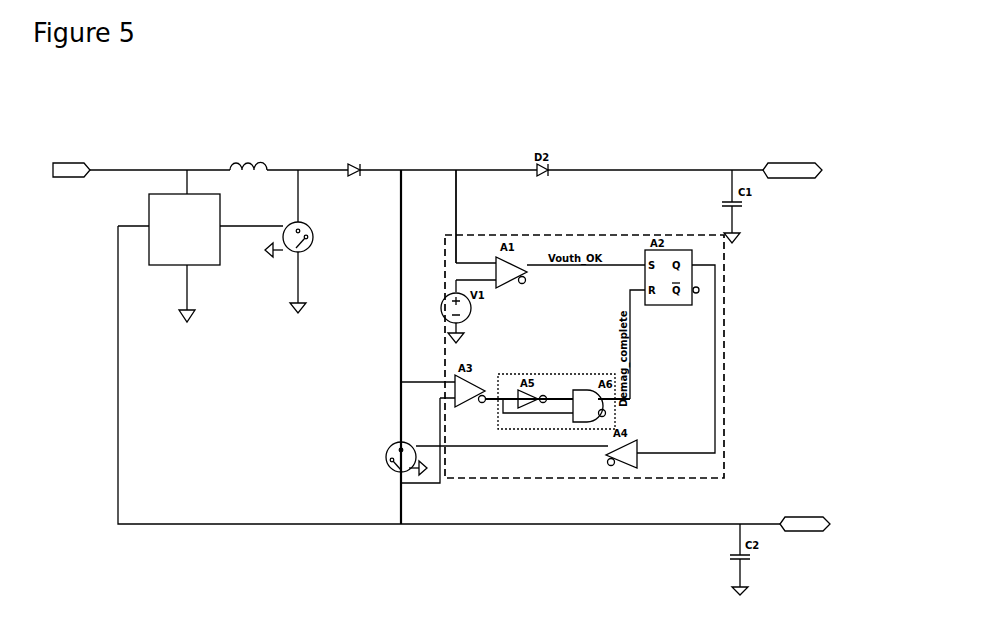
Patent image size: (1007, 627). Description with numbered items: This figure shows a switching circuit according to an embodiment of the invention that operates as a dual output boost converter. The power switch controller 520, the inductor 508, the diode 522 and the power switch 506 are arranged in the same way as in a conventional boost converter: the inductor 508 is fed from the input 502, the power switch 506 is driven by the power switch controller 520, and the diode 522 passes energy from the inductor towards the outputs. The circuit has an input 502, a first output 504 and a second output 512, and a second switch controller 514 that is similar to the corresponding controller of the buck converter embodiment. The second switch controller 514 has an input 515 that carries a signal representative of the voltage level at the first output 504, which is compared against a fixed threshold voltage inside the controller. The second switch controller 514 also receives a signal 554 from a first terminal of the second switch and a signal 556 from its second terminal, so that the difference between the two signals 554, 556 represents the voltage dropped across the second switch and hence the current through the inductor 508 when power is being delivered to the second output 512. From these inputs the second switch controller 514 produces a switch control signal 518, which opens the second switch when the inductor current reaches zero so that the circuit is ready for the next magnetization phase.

The input 502 is at (62, 165).
The first output 504 is at (799, 163).
The power switch 506 is at (300, 223).
The inductor L1 508 is at (260, 163).
The second output 512 is at (807, 515).
The second switch controller 514 is at (724, 342).
The input of the second switch controller 515 is at (457, 190).
The switch control signal 518 is at (532, 447).
The power switch controller 520 is at (167, 192).
The diode D1 522 is at (358, 165).
The signal from first terminal of second switch S2 554 is at (423, 382).
The signal from second terminal of second switch S2 556 is at (427, 487).